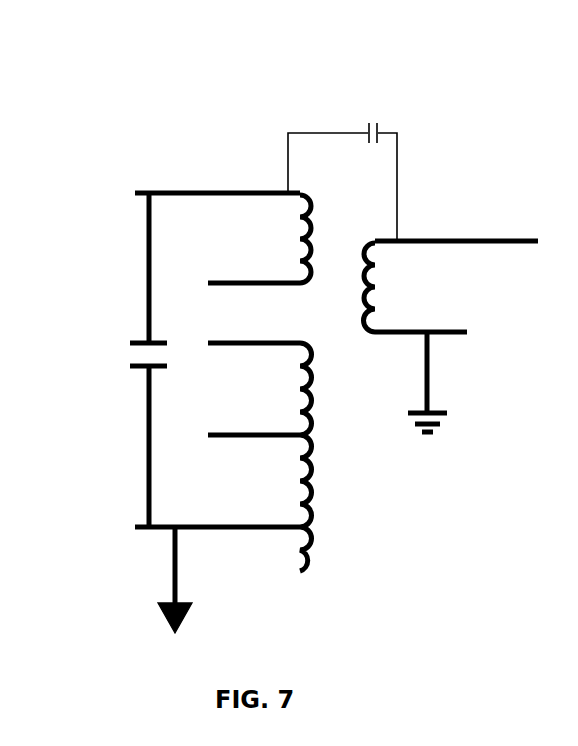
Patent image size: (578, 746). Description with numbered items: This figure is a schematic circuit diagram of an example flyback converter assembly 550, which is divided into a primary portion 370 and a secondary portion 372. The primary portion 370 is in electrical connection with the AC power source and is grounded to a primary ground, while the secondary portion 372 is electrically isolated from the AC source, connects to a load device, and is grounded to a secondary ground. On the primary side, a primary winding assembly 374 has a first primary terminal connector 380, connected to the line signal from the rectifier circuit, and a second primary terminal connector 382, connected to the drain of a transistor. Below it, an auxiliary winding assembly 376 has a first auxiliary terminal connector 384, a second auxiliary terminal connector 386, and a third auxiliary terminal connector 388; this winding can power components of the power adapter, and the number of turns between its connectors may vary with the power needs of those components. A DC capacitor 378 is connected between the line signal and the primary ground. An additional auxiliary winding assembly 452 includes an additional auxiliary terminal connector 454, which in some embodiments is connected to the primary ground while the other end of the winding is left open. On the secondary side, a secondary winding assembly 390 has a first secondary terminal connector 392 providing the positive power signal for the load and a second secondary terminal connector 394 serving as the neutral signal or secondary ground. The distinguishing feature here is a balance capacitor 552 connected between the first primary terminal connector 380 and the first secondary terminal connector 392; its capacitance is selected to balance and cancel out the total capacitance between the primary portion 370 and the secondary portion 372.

The flyback converter assembly 550 is at (57, 66).
The primary portion 370 is at (208, 141).
The secondary portion 372 is at (472, 150).
The primary winding assembly 374 is at (312, 216).
The auxiliary winding assembly 376 is at (301, 490).
The DC capacitor 378 is at (128, 342).
The first primary terminal connector 380 is at (208, 191).
The second primary terminal connector 382 is at (222, 280).
The first auxiliary terminal connector 384 is at (222, 343).
The second auxiliary terminal connector 386 is at (228, 435).
The third auxiliary terminal connector 388 is at (222, 527).
The secondary winding assembly 390 is at (376, 289).
The first secondary terminal connector 392 is at (447, 240).
The second secondary terminal connector 394 is at (468, 331).
The additional auxiliary winding assembly 452 is at (312, 560).
The additional auxiliary terminal connector 454 is at (287, 528).
The balance capacitor 552 is at (368, 108).